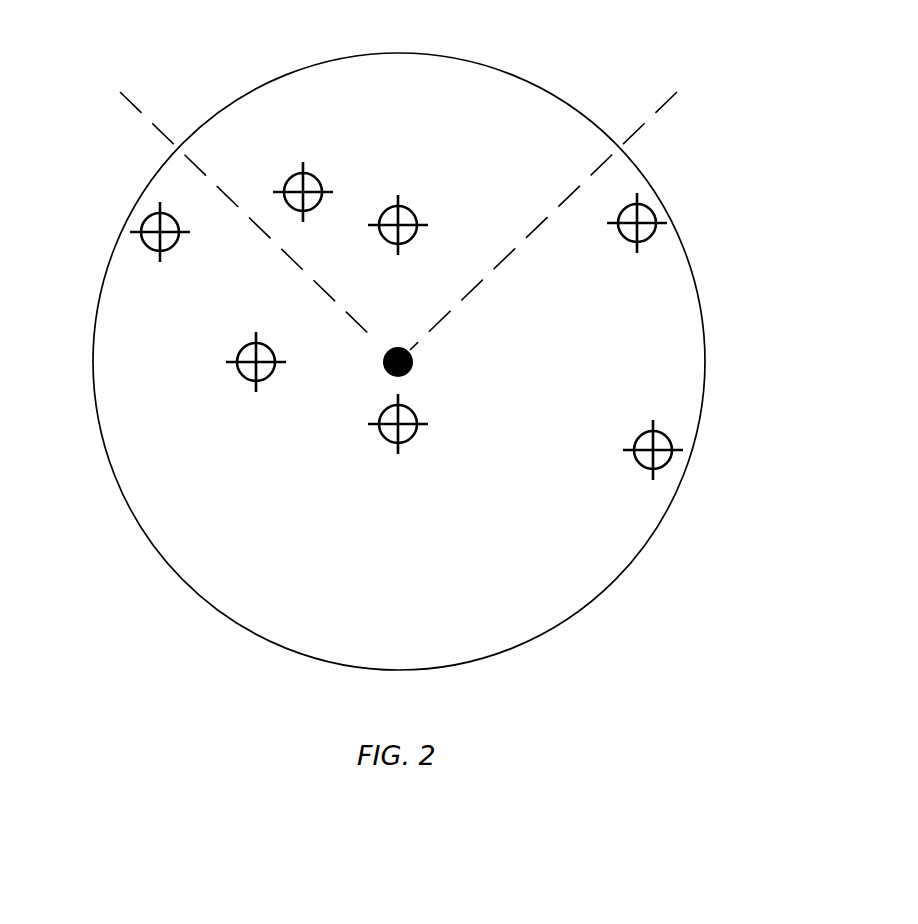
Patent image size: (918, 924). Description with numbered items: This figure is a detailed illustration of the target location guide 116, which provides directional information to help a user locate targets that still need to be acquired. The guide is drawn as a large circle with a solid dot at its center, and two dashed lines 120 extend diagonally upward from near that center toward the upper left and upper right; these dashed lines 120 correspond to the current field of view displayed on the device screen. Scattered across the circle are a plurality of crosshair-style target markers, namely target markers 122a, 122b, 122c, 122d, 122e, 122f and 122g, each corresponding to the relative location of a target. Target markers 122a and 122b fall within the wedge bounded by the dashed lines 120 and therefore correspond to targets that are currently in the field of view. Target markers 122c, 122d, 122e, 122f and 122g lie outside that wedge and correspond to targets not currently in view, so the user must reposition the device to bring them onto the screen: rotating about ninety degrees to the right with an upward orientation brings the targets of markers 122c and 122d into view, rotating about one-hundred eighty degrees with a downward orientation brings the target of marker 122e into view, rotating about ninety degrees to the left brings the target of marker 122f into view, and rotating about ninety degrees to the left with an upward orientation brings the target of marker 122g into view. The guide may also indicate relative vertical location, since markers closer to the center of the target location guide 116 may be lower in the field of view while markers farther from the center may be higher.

The target location guide 116 is at (415, 345).
The dashed lines 120 is at (131, 108).
The target marker 122a is at (432, 214).
The target marker 122b is at (337, 181).
The target marker 122c is at (602, 231).
The target marker 122d is at (618, 458).
The target marker 122e is at (363, 431).
The target marker 122f is at (219, 369).
The target marker 122g is at (194, 239).